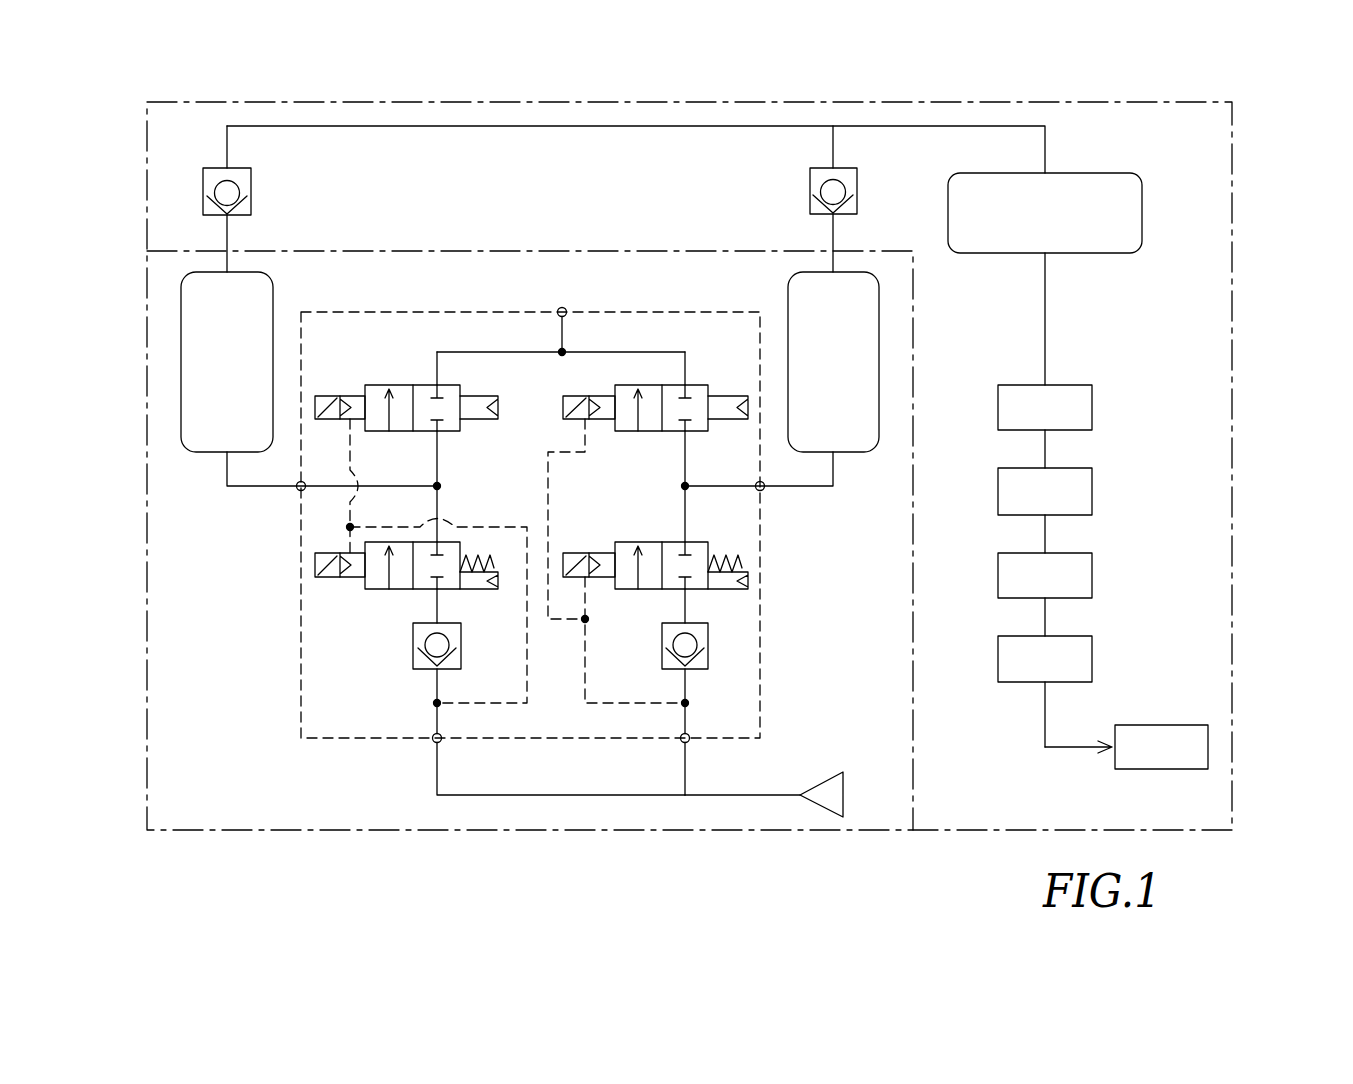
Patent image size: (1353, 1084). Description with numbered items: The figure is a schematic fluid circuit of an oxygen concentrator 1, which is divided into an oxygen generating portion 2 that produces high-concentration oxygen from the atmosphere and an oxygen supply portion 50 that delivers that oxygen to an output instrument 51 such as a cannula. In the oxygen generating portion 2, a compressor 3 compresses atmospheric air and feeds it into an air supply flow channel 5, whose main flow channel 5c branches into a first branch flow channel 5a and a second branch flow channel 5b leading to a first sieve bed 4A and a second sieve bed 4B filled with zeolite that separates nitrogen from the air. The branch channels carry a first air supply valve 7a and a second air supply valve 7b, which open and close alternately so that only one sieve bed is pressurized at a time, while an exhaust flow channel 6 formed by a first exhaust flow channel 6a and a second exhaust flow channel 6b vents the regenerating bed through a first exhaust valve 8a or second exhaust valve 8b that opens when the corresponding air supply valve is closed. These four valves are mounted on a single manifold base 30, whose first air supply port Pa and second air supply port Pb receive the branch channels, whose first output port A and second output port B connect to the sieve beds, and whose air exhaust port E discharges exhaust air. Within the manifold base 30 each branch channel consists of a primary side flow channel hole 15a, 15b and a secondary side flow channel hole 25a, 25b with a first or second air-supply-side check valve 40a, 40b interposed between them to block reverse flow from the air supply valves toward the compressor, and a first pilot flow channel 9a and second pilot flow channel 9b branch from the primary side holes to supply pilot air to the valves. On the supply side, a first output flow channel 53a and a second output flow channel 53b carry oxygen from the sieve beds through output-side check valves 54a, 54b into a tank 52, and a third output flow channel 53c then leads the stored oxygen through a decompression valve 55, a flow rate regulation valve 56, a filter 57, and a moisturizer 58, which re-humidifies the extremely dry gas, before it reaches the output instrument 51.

The oxygen concentrator 1 is at (1312, 112).
The oxygen generating portion 2 is at (147, 617).
The compressor 3 is at (833, 795).
The first sieve bed 4A is at (812, 377).
The second sieve bed 4B is at (206, 377).
The air supply flow channel 5 is at (483, 872).
The first branch flow channel 5a is at (685, 778).
The second branch flow channel 5b is at (437, 772).
The main flow channel 5c is at (735, 795).
The exhaust flow channel 6 is at (630, 195).
The first exhaust flow channel 6a is at (614, 352).
The second exhaust flow channel 6b is at (483, 352).
The first air supply valve 7a is at (700, 542).
The second air supply valve 7b is at (380, 589).
The first exhaust valve 8a is at (700, 385).
The second exhaust valve 8b is at (380, 385).
The first pilot flow channel 9a is at (622, 703).
The second pilot flow channel 9b is at (498, 703).
The primary side flow channel hole 15a is at (692, 720).
The primary side flow channel hole 15b is at (432, 697).
The secondary side flow channel hole 25a is at (685, 605).
The secondary side flow channel hole 25b is at (437, 603).
The manifold base 30 is at (760, 690).
The first air-supply-side check valve 40a is at (693, 670).
The second air-supply-side check valve 40b is at (422, 665).
The oxygen supply portion 50 is at (1232, 262).
The output instrument 51 is at (1193, 746).
The tank 52 is at (1112, 212).
The first output flow channel 53a is at (833, 232).
The second output flow channel 53b is at (227, 232).
The third output flow channel 53c is at (1045, 160).
The output-side check valve 54a is at (810, 183).
The output-side check valve 54b is at (251, 185).
The decompression valve 55 is at (1070, 402).
The flow rate regulation valve 56 is at (1070, 487).
The filter 57 is at (1070, 572).
The moisturizer 58 is at (1070, 655).
The first output port A is at (763, 492).
The second output port B is at (297, 490).
The air exhaust port E is at (558, 309).
The first air supply port Pa is at (681, 743).
The second air supply port Pb is at (433, 743).